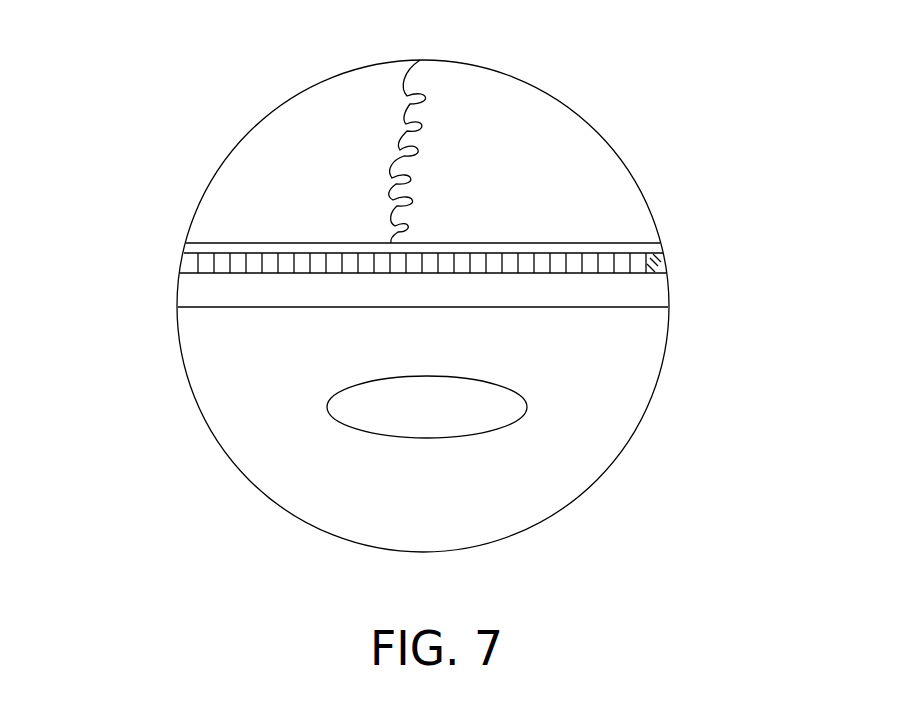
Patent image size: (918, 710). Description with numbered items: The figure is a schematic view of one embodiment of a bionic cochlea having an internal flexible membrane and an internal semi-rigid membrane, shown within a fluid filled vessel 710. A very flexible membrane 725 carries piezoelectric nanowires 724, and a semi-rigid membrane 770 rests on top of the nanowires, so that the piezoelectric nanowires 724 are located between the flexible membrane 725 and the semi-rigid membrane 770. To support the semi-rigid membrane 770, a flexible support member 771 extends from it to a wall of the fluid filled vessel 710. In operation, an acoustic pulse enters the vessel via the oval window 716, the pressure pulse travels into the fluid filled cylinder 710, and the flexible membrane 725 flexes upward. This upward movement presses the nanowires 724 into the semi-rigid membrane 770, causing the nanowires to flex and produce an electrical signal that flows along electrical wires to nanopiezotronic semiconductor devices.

The fluid filled vessel 710 is at (248, 487).
The oval window 716 is at (442, 438).
The piezoelectric nanowires 724 is at (183, 260).
The flexible membrane 725 is at (200, 295).
The semi-rigid membrane 770 is at (190, 249).
The flexible support member 771 is at (420, 152).